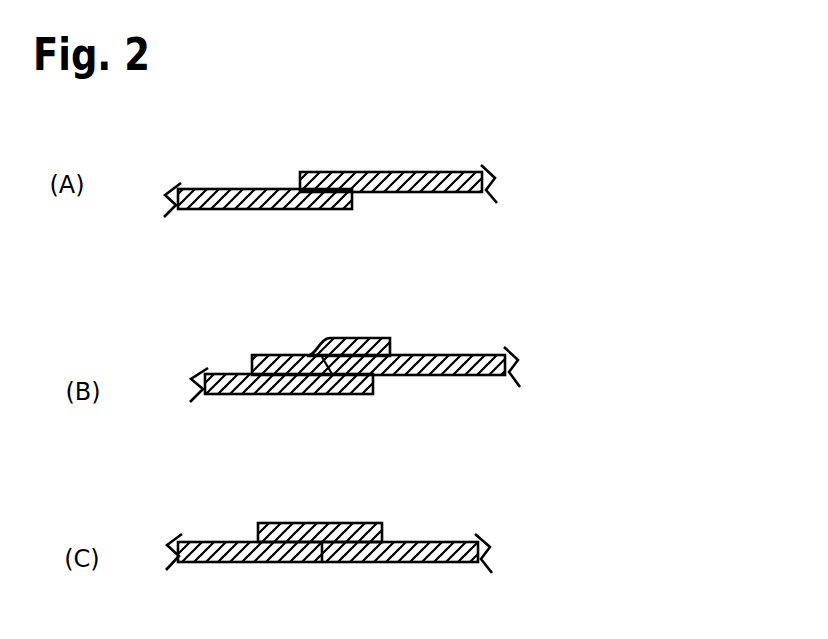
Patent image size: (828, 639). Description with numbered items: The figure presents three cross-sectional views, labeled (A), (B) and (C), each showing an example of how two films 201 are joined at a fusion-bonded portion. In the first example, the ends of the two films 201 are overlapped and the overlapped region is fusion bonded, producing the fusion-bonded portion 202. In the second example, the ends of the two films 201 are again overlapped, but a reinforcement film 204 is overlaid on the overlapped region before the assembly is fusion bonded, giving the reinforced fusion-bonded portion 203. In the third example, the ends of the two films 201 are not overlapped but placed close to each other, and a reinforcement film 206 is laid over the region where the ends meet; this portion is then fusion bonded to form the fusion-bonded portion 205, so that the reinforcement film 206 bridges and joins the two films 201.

The film 201 is at (231, 189).
The fusion-bonded portion 202 is at (322, 210).
The fusion-bonded portion 203 is at (353, 394).
The reinforcement film 204 is at (313, 346).
The fusion-bonded portion 205 is at (321, 562).
The reinforcement film 206 is at (322, 542).